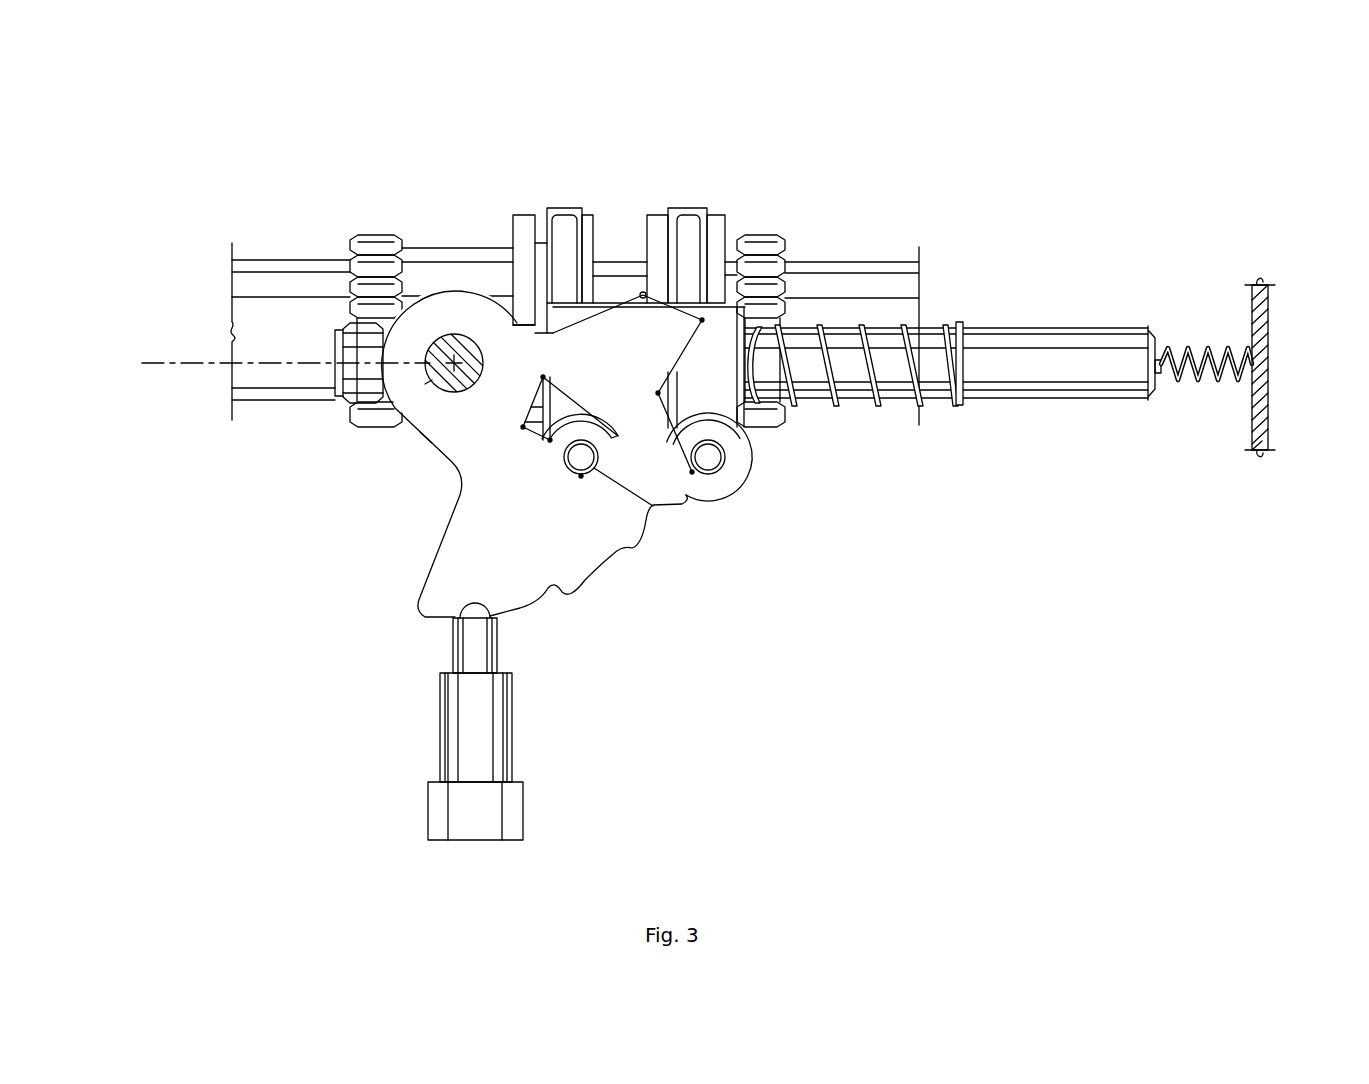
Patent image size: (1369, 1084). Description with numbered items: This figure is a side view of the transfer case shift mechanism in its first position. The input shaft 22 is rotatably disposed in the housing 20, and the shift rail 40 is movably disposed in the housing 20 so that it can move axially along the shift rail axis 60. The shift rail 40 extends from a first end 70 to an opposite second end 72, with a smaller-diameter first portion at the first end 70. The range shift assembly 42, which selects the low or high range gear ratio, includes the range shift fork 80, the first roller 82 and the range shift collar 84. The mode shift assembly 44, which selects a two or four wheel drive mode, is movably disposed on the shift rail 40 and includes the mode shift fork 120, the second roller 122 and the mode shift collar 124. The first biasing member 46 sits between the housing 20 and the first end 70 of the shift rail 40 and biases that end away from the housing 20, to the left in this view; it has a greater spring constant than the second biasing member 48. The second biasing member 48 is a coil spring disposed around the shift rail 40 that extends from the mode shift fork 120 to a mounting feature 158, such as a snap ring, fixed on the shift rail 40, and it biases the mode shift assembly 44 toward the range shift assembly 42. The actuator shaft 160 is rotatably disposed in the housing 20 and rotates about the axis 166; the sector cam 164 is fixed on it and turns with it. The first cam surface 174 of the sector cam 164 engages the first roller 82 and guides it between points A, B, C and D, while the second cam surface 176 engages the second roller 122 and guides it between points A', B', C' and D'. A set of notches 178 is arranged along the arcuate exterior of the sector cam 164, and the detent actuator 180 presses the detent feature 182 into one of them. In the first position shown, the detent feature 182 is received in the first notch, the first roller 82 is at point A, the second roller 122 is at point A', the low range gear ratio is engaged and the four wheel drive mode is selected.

The housing 20 is at (1270, 378).
The input shaft 22 is at (238, 258).
The shift rail 40 is at (1118, 400).
The range shift assembly 42 is at (380, 163).
The mode shift assembly 44 is at (722, 163).
The first biasing member 46 is at (1185, 350).
The second biasing member 48 is at (887, 406).
The shift rail axis 60 is at (174, 365).
The first end 70 is at (1156, 386).
The second end 72 is at (335, 386).
The range shift fork 80 is at (563, 207).
The first roller 82 is at (653, 507).
The range shift collar 84 is at (443, 248).
The mode shift fork 120 is at (687, 207).
The second roller 122 is at (741, 487).
The mode shift collar 124 is at (723, 213).
The mounting feature 158 is at (963, 406).
The actuator shaft 160 is at (427, 367).
The sector cam 164 is at (428, 444).
The axis 166 is at (430, 382).
The first cam surface 174 is at (563, 477).
The second cam surface 176 is at (662, 428).
The set of notches 178 is at (493, 613).
The detent actuator 180 is at (440, 735).
The detent feature 182 is at (453, 643).